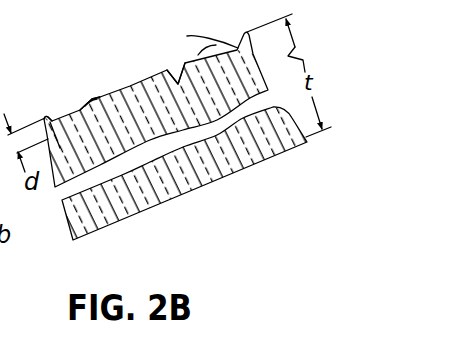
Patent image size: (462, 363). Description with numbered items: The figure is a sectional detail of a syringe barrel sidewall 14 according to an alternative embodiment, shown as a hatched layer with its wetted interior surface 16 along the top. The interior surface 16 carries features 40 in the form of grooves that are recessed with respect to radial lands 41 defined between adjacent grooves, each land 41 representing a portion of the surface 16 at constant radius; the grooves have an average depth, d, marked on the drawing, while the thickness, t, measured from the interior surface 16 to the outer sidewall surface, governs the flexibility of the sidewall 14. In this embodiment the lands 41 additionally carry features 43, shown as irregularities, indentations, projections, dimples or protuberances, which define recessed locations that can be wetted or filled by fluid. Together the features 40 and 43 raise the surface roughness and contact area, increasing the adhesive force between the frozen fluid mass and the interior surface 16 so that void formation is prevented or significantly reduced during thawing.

The sidewall 14 is at (220, 179).
The interior surface 16 is at (167, 72).
The features 40 is at (178, 83).
The lands 41 is at (99, 97).
The features 43 is at (50, 116).